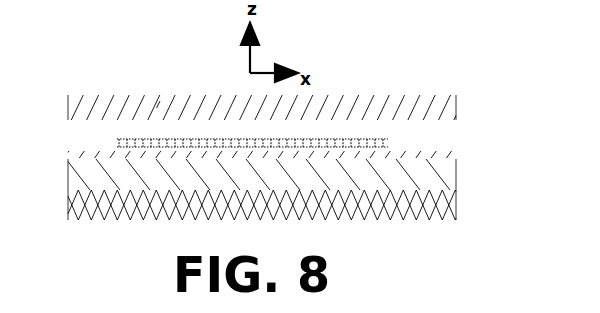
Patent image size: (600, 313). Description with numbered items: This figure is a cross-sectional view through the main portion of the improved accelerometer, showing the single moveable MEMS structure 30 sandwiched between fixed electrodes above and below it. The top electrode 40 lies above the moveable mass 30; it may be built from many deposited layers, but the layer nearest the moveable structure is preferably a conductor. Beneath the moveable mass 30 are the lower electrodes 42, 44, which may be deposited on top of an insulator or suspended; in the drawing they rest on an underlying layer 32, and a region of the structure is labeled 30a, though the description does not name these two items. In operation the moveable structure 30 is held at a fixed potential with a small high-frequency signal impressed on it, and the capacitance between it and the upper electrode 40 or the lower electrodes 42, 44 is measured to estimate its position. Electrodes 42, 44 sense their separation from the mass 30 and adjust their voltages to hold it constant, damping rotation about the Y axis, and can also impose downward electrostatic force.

The moveable structure 30 is at (388, 148).
The upper surface of plate 30a is at (163, 105).
The substrate 32 is at (394, 221).
The top electrode 40 is at (395, 98).
The lower electrode 42 is at (405, 153).
The lower electrode 44 is at (106, 154).